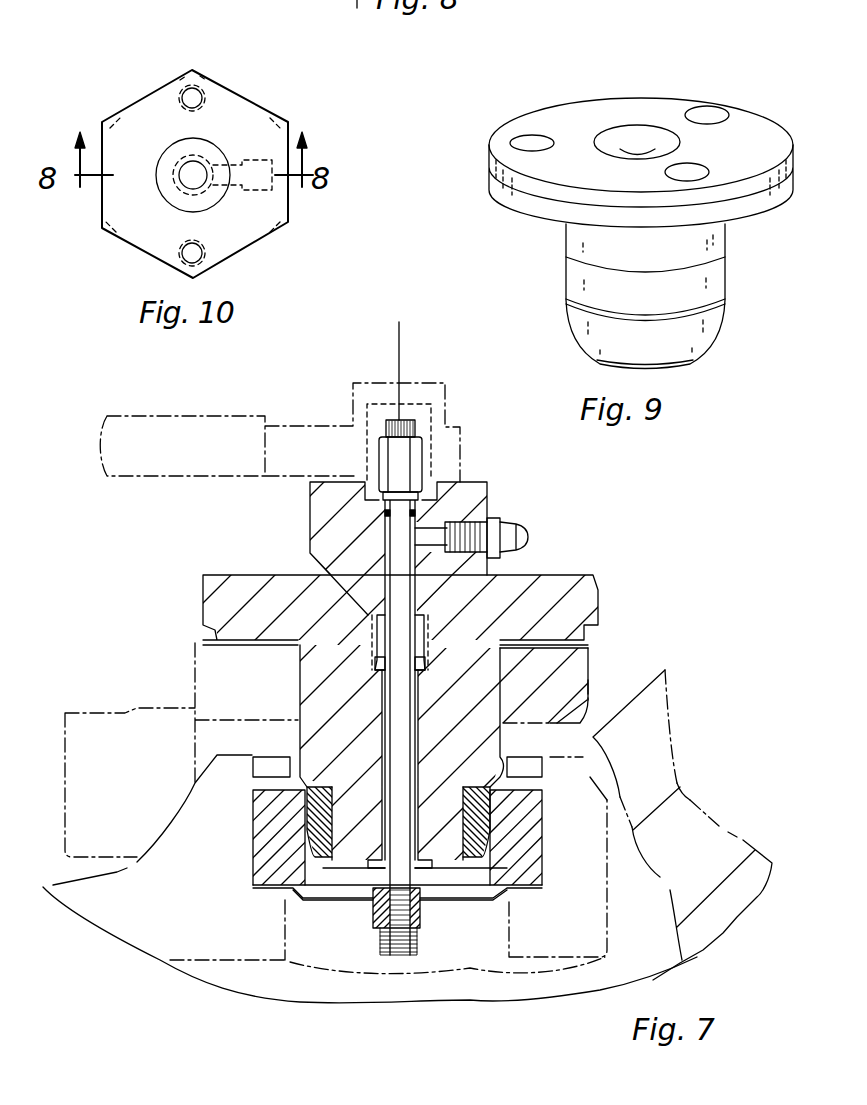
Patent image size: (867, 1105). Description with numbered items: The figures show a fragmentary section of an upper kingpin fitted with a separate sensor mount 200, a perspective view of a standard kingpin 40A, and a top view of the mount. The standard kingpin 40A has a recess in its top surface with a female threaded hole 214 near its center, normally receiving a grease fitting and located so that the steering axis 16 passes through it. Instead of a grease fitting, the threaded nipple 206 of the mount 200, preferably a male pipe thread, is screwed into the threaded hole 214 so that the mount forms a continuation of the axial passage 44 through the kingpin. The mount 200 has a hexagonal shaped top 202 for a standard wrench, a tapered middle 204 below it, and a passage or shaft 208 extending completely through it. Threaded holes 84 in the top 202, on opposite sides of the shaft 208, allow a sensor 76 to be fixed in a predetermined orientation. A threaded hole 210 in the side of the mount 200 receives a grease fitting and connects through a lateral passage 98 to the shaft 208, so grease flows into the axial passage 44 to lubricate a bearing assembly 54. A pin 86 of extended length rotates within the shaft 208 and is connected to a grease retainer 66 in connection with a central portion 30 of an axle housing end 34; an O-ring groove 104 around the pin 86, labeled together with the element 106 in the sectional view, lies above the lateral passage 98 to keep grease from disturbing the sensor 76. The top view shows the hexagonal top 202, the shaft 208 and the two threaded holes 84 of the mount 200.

In FIG. 7, the steering axis 16 is at (401, 340).
In FIG. 7, the central portion 30 is at (721, 824).
In FIG. 7, the axle housing end 34 is at (67, 882).
In FIG. 9, the standard kingpin 40A is at (665, 92).
In FIG. 7, the standard kingpin 40A is at (450, 704).
In FIG. 7, the axial passage 44 is at (392, 805).
In FIG. 7, the bearing assembly 54 is at (246, 868).
In FIG. 7, the grease retainer 66 is at (466, 902).
In FIG. 7, the sensor 76 is at (460, 427).
In FIG. 10, the threaded holes 84 is at (196, 92).
In FIG. 7, the pin 86 is at (382, 685).
In FIG. 7, the lateral passage 98 is at (423, 496).
In FIG. 7, the O-ring groove 104 is at (392, 498).
In FIG. 7, the bolt head cap 106 is at (400, 428).
In FIG. 10, the sensor mount 200 is at (199, 139).
In FIG. 7, the sensor mount 200 is at (386, 557).
In FIG. 10, the hexagonal shaped top 202 is at (242, 97).
In FIG. 7, the hexagonal shaped top 202 is at (310, 499).
In FIG. 7, the tapered middle 204 is at (379, 594).
In FIG. 7, the threaded nipple 206 is at (428, 656).
In FIG. 10, the shaft 208 is at (183, 181).
In FIG. 7, the shaft 208 is at (383, 541).
In FIG. 7, the threaded hole 210 is at (486, 522).
In FIG. 7, the female threaded hole 214 is at (375, 613).